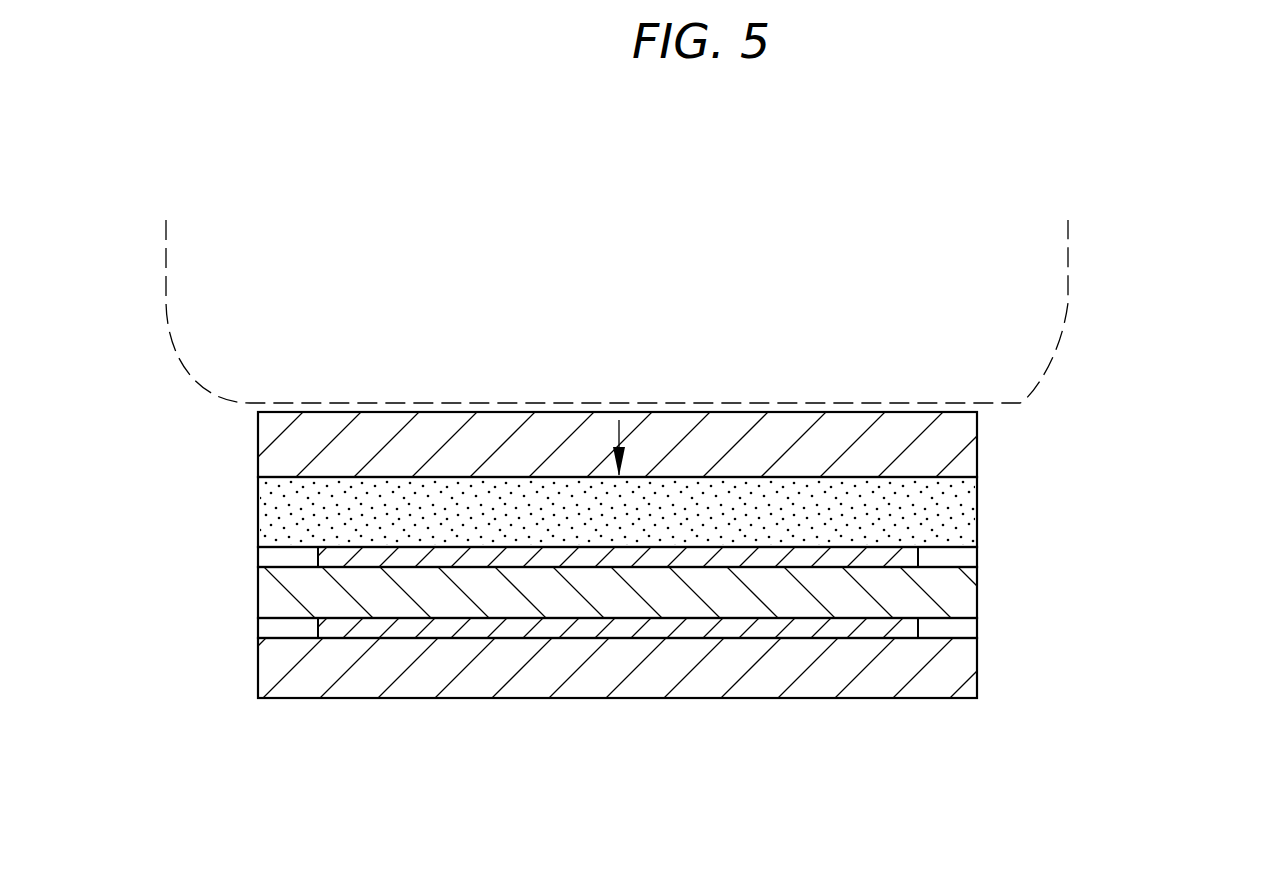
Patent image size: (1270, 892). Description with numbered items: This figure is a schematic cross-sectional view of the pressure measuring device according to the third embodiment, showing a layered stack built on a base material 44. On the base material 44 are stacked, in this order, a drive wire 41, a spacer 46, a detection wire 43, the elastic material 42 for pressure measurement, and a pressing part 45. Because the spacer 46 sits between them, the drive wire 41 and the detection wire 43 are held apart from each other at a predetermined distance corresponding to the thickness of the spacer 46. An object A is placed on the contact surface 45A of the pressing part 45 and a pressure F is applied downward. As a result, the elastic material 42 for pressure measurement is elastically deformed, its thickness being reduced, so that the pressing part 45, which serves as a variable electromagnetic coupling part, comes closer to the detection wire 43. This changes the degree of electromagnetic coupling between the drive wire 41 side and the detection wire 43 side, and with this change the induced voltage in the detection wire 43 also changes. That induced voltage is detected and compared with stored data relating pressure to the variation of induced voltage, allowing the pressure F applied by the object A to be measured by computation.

The pressing part 45 is at (947, 435).
The contact surface 45A is at (898, 407).
The elastic material for pressure measurement 42 is at (948, 510).
The detection wire 43 is at (977, 553).
The spacer 46 is at (948, 598).
The drive wire 41 is at (977, 625).
The base material 44 is at (948, 678).
The object A is at (1038, 282).
The pressure F is at (630, 448).